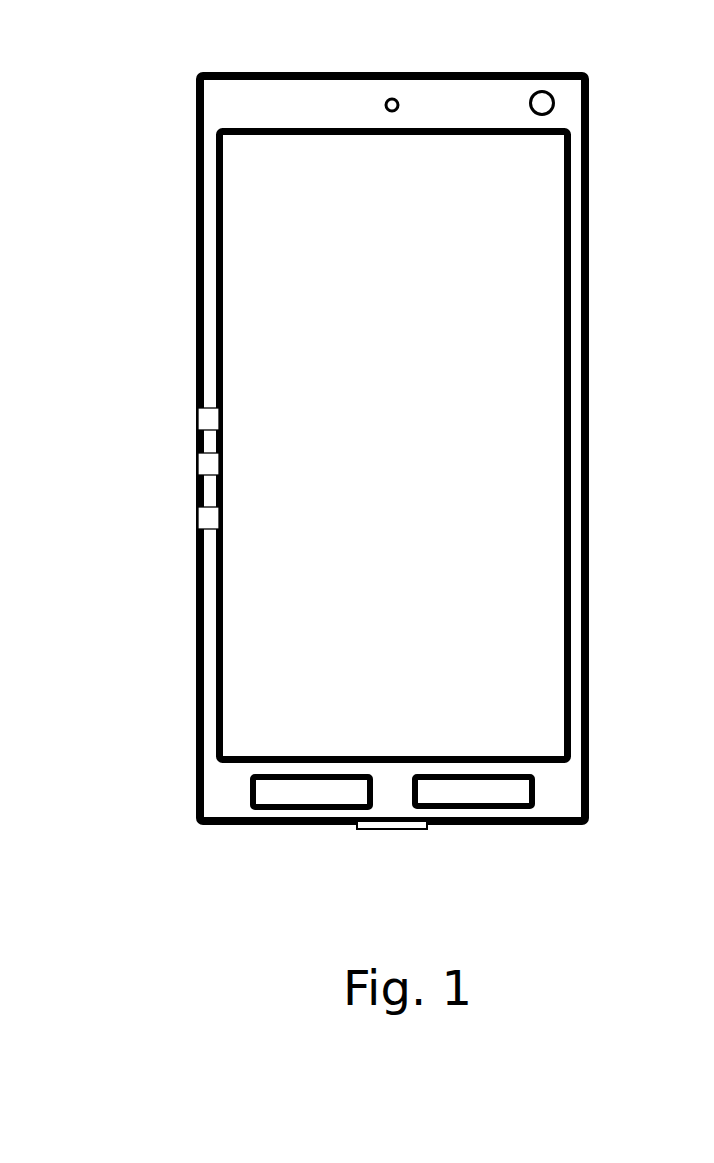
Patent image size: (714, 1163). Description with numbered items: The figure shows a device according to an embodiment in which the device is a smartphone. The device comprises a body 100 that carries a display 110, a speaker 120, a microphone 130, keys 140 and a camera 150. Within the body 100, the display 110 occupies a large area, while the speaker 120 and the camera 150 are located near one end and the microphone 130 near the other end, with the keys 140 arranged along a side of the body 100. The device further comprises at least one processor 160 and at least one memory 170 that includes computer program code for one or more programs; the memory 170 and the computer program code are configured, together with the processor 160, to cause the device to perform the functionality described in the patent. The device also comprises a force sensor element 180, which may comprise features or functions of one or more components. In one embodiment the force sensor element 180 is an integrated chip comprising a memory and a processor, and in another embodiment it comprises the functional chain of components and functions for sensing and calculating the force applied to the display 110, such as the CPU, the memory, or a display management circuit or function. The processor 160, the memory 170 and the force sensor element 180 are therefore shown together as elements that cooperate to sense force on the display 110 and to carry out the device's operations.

The body 100 is at (209, 106).
The display 110 is at (243, 340).
The speaker 120 is at (391, 98).
The microphone 130 is at (390, 829).
The keys 140 is at (429, 774).
The camera 150 is at (547, 91).
The processor 160 is at (166, 418).
The memory 170 is at (166, 465).
The force sensor element 180 is at (166, 519).